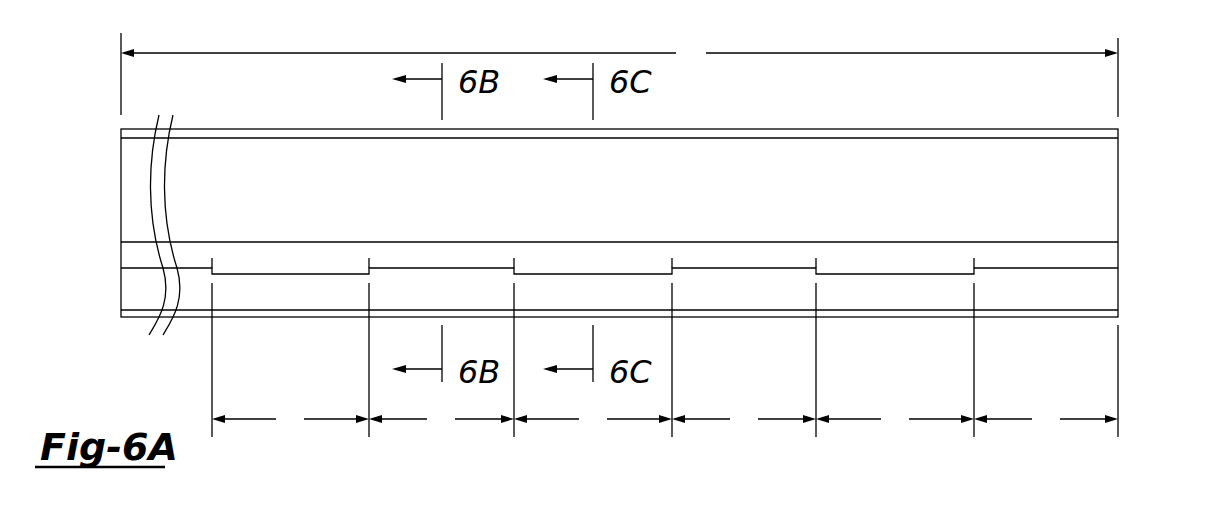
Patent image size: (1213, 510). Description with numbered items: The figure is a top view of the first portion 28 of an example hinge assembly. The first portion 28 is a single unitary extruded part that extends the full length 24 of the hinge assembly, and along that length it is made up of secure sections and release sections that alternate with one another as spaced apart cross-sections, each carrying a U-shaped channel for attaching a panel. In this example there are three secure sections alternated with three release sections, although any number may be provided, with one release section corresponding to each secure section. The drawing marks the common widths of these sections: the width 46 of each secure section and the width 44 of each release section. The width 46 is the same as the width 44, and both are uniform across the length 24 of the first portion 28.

The length 24 is at (619, 75).
The first portion 28 is at (1095, 193).
The width 44 is at (1078, 420).
The width 46 is at (930, 420).